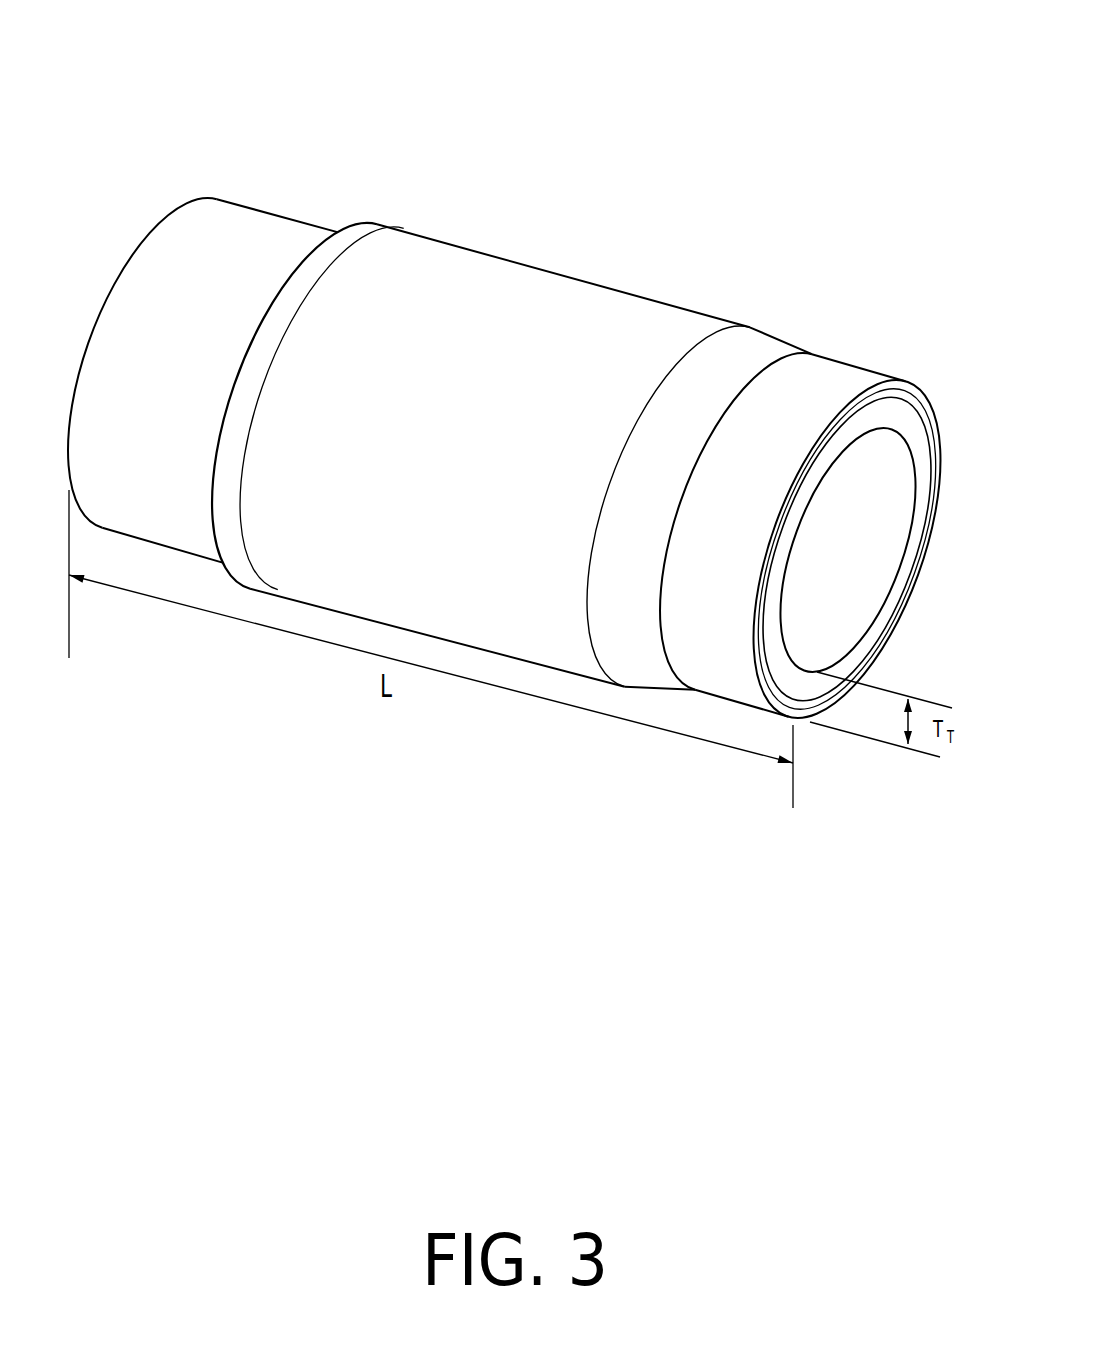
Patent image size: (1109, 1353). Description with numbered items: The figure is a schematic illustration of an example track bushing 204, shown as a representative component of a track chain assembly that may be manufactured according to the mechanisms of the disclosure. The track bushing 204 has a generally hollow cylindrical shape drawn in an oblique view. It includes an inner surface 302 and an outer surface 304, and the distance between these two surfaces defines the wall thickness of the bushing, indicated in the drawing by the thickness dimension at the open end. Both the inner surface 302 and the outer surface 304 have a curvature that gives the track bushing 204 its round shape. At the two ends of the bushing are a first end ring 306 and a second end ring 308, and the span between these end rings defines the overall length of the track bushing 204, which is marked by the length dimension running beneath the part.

The track bushing 204 is at (820, 91).
The inner surface 302 is at (882, 537).
The outer surface 304 is at (617, 308).
The first end ring 306 is at (185, 198).
The second end ring 308 is at (875, 410).